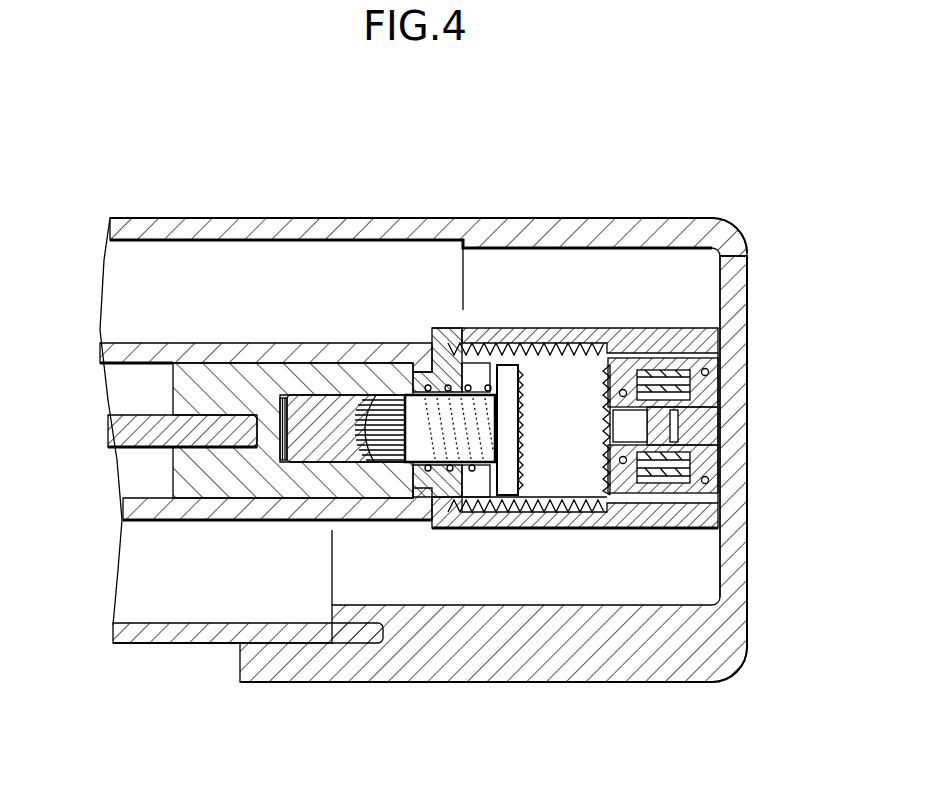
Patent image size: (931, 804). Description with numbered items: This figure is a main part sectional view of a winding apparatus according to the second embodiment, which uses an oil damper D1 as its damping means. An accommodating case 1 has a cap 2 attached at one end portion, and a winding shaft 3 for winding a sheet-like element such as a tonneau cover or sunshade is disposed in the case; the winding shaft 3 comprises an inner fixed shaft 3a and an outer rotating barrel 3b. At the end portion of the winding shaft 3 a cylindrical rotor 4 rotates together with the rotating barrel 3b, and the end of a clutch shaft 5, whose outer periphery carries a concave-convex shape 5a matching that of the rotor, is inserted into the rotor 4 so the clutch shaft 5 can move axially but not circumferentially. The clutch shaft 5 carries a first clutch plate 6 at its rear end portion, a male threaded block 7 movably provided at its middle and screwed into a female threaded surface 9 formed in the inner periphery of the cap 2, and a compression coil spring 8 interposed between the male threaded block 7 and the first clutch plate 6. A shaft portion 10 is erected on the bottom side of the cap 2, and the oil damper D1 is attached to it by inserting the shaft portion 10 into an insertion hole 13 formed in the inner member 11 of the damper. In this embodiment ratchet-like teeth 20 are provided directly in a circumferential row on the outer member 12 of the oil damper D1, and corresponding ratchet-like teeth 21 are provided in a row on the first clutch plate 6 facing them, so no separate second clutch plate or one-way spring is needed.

The accommodating case 1 is at (240, 218).
The cap 2 is at (620, 676).
The winding shaft 3 is at (158, 280).
The inner fixed shaft 3a is at (122, 430).
The outer rotating barrel 3b is at (110, 352).
The cylindrical rotor 4 is at (226, 492).
The clutch shaft 5 is at (318, 395).
The concave-convex shape 5a is at (380, 460).
The first clutch plate 6 is at (505, 508).
The male threaded block 7 is at (467, 345).
The compression coil spring 8 is at (430, 492).
The female threaded surface 9 is at (550, 343).
The shaft portion 10 is at (720, 432).
The inner member 11 is at (715, 398).
The outer member 12 is at (665, 358).
The insertion hole 13 is at (632, 432).
The ratchet-like teeth 20 is at (586, 355).
The ratchet-like teeth 21 is at (522, 490).
The oil damper D1 is at (594, 484).